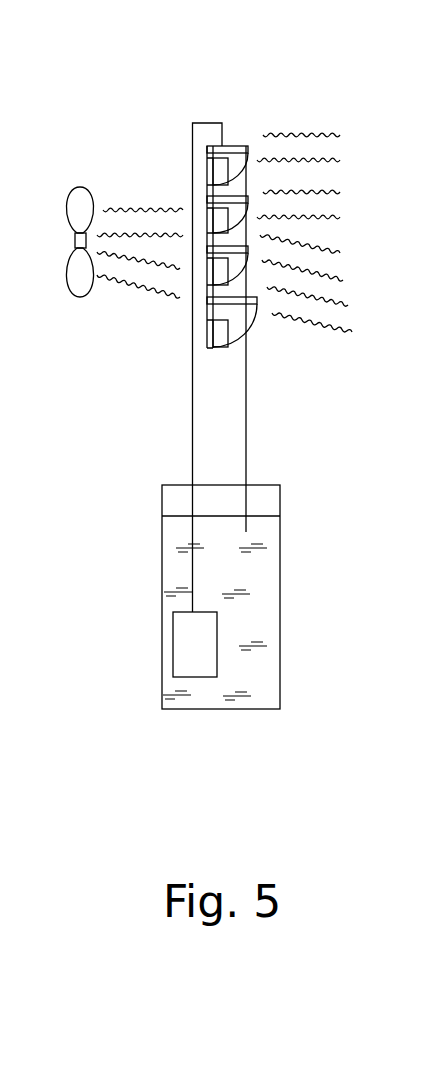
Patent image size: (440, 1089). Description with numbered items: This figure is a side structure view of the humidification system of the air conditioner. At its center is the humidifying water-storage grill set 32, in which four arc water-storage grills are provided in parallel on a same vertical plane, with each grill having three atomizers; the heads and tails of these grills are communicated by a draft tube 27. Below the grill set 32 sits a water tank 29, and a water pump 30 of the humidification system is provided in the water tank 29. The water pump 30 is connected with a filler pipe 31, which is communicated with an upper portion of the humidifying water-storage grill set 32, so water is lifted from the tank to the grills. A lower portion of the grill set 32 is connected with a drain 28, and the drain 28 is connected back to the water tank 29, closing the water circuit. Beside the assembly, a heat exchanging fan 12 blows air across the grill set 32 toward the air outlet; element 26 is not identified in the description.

The heat exchanging fan 12 is at (82, 205).
The mounting strip 26 is at (222, 337).
The draft tube 27 is at (235, 287).
The drain 28 is at (245, 468).
The water tank 29 is at (180, 503).
The water pump 30 is at (195, 660).
The filler pipe 31 is at (193, 183).
The humidifying water-storage grill set 32 is at (243, 146).